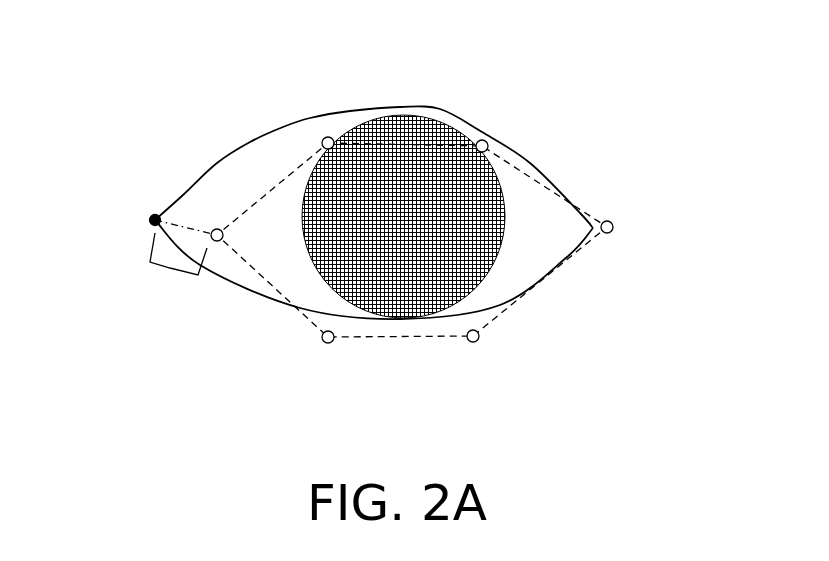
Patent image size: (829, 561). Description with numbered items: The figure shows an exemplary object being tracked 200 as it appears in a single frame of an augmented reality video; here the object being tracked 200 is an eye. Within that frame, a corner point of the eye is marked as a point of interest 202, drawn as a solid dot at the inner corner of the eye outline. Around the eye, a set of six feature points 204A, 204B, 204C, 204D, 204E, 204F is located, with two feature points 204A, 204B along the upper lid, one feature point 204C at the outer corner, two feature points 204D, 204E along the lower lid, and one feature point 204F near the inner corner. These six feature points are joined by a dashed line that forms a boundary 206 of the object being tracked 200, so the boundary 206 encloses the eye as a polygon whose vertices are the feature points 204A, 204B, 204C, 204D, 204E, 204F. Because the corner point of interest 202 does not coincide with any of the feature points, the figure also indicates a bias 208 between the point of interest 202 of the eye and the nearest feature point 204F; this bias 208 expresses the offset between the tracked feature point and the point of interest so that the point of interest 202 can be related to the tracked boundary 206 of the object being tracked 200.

The object being tracked 200 is at (250, 145).
The point of interest 202 is at (151, 219).
The feature point 204A is at (330, 137).
The feature point 204B is at (487, 141).
The feature point 204C is at (613, 230).
The feature point 204D is at (480, 338).
The feature point 204E is at (323, 341).
The feature point 204F is at (216, 241).
The boundary 206 is at (405, 338).
The bias 208 is at (170, 268).